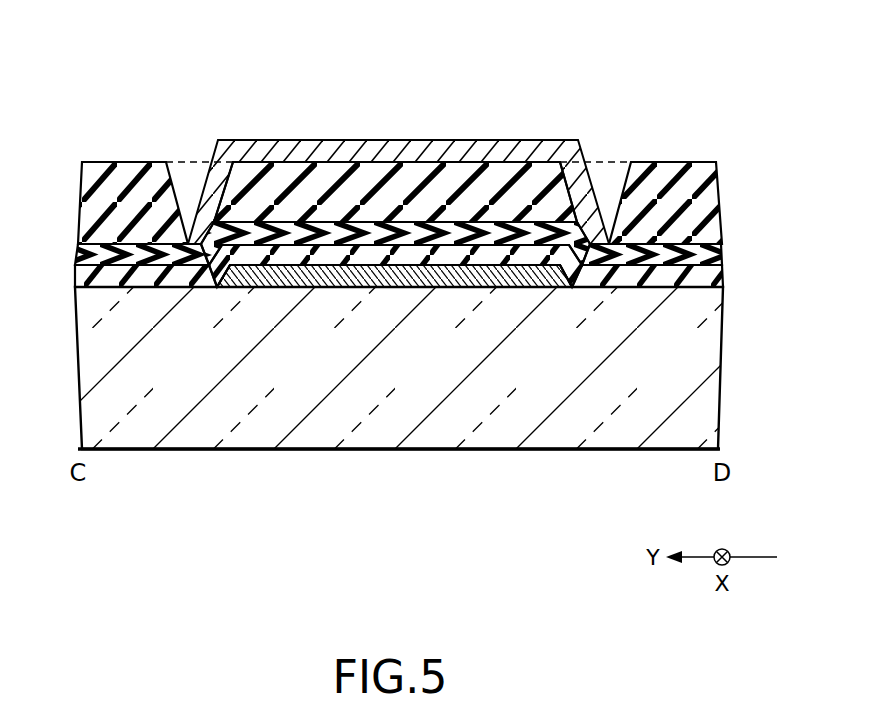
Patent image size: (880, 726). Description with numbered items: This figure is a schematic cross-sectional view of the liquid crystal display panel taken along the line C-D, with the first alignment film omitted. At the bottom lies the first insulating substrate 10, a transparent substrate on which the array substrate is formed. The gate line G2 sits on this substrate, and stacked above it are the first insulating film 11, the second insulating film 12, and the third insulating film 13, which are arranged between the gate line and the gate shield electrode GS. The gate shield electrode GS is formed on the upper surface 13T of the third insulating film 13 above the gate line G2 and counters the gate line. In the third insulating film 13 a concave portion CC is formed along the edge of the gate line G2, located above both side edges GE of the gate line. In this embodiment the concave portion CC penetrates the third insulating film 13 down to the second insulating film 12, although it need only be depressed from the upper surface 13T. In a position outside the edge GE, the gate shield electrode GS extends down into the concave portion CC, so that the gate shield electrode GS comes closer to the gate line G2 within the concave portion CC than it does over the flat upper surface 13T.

The first insulating substrate 10 is at (718, 345).
The first insulating film 11 is at (713, 282).
The second insulating film 12 is at (713, 252).
The third insulating film 13 is at (92, 212).
The upper surface of the third insulating film 13T is at (333, 158).
The gate shield electrode GS is at (489, 150).
The side edges of the gate line GE is at (217, 287).
The gate line G2 is at (385, 272).
The concave portion CC is at (186, 157).